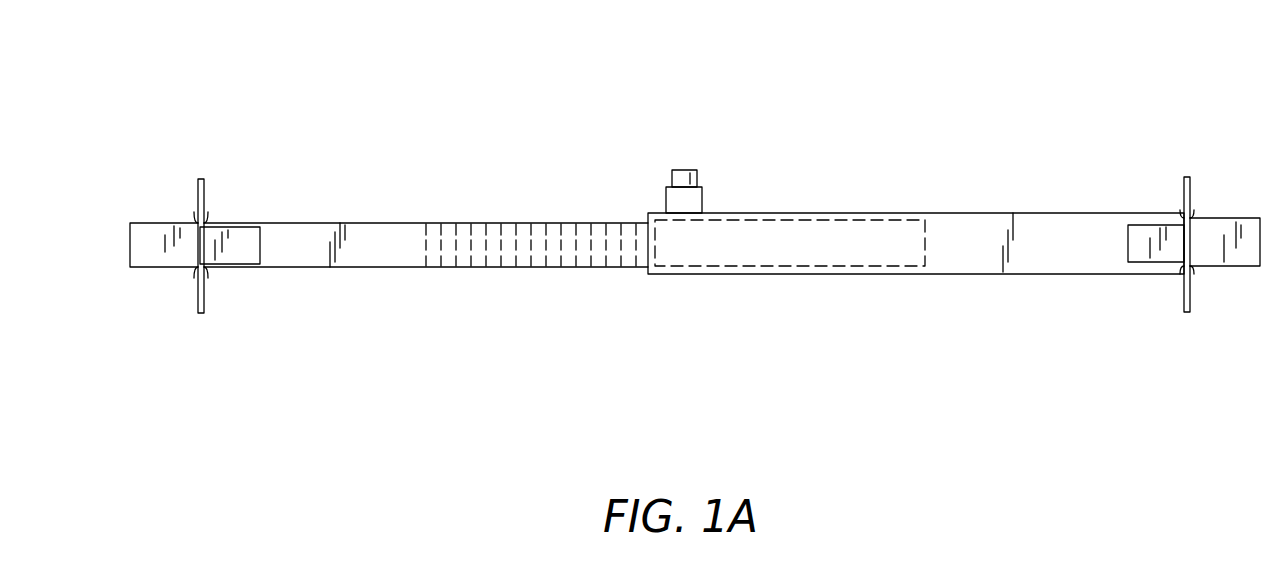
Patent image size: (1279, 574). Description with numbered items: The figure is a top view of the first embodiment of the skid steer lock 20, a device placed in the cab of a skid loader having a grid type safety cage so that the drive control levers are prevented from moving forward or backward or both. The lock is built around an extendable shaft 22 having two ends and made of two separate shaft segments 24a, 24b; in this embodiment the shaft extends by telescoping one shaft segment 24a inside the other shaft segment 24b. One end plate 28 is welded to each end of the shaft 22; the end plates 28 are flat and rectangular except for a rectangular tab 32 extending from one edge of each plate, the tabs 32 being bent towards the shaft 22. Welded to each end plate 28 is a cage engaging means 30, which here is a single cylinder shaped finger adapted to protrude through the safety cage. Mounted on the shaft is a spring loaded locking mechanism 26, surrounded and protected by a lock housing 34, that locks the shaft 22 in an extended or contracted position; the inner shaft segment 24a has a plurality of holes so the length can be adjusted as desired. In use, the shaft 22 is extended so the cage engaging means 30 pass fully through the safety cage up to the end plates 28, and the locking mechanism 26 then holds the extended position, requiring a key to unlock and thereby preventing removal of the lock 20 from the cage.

The skid steer lock 20 is at (930, 103).
The extendable shaft 22 is at (1165, 297).
The shaft segment 24a is at (402, 222).
The shaft segment 24b is at (852, 213).
The locking mechanism 26 is at (680, 170).
The end plate 28 is at (206, 186).
The cage engaging means 30 is at (190, 278).
The rectangular tab 32 is at (252, 226).
The lock housing 34 is at (703, 198).